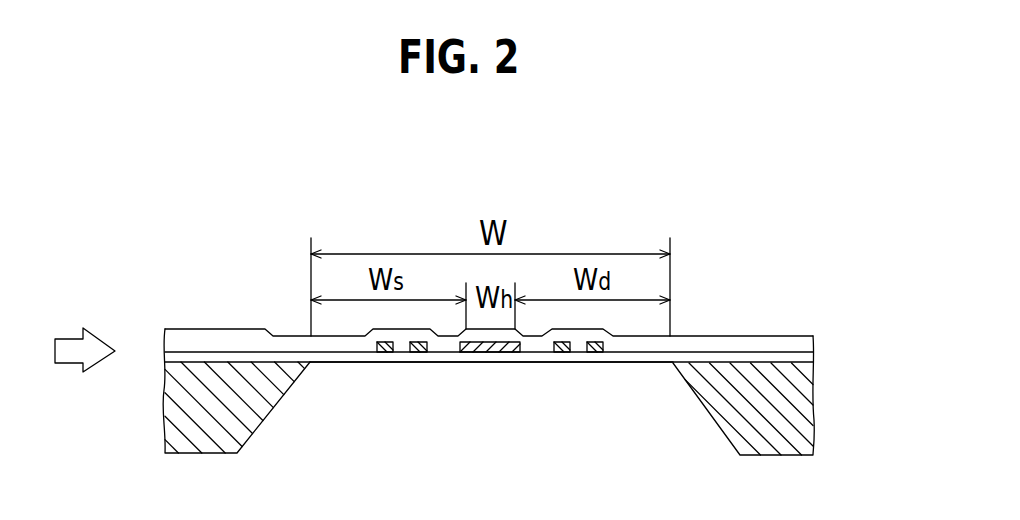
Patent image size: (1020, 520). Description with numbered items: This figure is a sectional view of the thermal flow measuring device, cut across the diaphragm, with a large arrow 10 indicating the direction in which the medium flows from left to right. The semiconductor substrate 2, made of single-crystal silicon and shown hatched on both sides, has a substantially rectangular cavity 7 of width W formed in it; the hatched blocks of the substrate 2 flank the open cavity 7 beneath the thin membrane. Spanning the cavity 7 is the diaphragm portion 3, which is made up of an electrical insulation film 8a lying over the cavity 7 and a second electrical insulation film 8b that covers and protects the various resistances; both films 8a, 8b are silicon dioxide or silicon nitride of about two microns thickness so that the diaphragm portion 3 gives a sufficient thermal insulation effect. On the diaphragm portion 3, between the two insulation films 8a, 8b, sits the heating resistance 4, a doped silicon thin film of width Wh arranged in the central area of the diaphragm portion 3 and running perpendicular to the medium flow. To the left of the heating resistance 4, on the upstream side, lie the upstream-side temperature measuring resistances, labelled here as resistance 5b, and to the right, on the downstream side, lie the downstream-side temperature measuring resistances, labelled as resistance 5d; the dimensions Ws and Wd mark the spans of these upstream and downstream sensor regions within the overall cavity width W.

The semiconductor substrate 2 is at (808, 408).
The diaphragm portion 3 is at (338, 352).
The heating resistance 4 is at (493, 353).
The upstream-side temperature measuring resistance 5b is at (388, 353).
The downstream-side temperature measuring resistance 5d is at (598, 353).
The cavity 7 is at (438, 408).
The electrical insulation film 8a is at (808, 357).
The electrical insulation film 8b is at (808, 344).
The air flow direction 10 is at (67, 338).